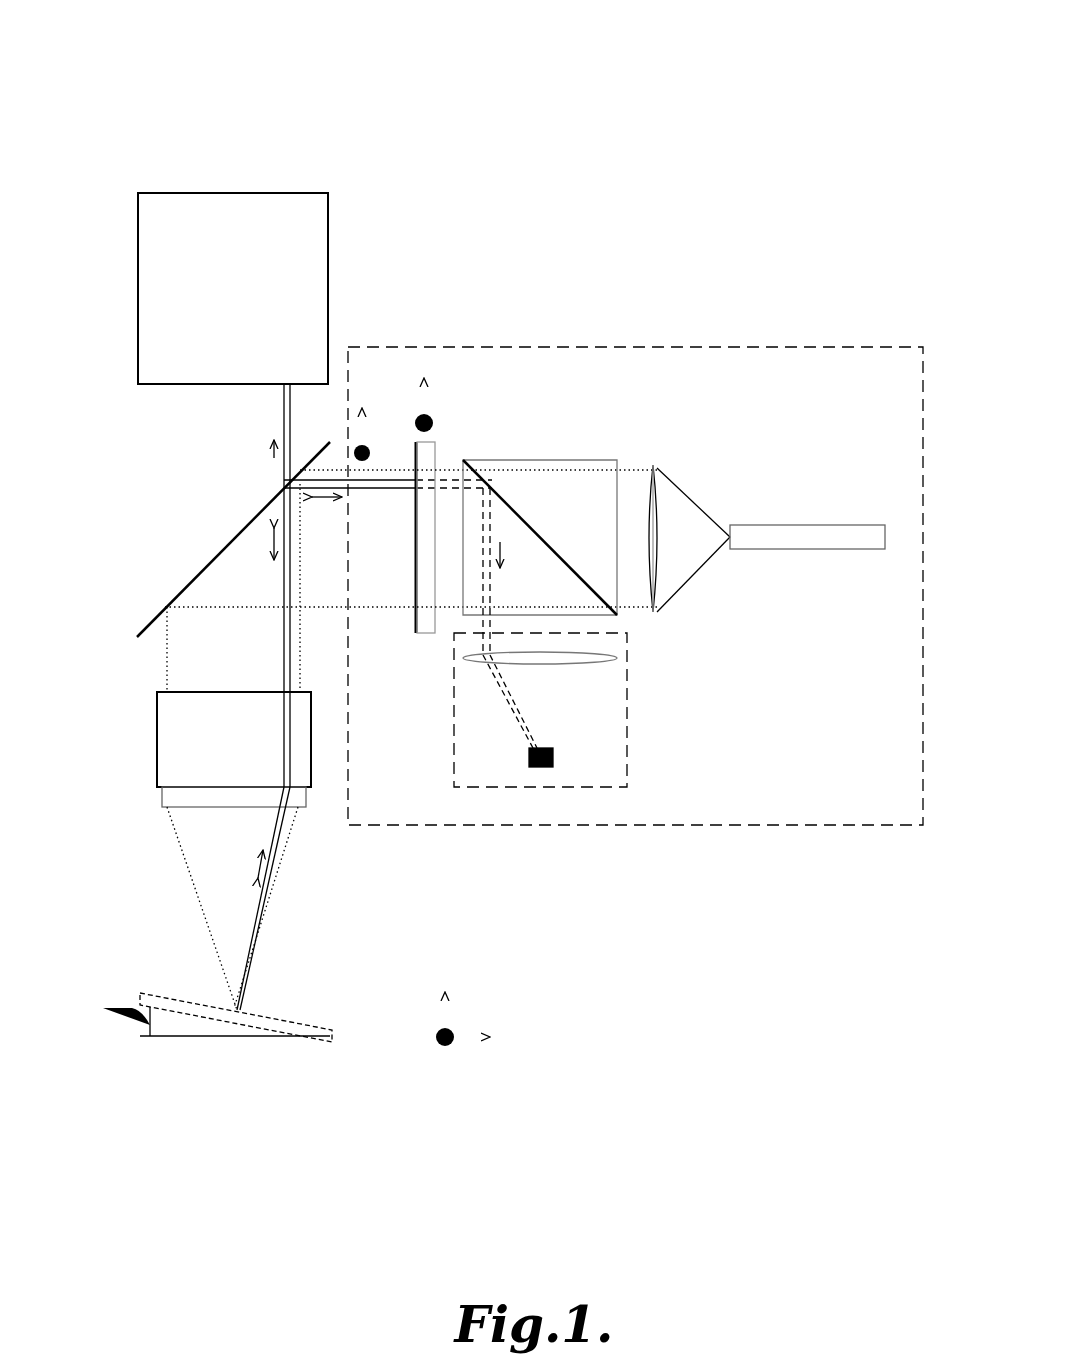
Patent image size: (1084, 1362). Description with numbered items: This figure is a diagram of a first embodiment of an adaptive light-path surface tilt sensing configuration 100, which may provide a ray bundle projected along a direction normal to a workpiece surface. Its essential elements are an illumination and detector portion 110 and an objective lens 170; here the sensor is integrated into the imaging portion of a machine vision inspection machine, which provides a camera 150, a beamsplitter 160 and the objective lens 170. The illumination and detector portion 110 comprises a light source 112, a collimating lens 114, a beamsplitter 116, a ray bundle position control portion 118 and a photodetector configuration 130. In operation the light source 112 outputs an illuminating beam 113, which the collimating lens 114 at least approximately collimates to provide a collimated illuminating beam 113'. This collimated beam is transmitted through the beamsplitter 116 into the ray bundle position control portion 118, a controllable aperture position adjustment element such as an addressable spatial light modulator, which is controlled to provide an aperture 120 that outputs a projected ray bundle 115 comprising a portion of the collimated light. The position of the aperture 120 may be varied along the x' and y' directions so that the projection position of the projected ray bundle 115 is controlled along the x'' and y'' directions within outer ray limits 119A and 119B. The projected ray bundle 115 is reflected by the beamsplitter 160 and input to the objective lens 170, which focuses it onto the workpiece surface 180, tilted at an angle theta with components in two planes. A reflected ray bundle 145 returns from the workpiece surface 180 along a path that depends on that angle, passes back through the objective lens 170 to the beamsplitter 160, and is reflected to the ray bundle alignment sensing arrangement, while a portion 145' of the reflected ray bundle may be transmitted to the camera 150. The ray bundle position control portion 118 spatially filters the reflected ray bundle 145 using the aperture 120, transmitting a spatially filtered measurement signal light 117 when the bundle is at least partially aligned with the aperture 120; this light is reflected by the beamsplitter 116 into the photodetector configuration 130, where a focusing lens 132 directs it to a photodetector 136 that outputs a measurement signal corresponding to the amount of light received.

The adaptive light-path surface tilt sensing configuration 100 is at (877, 142).
The illumination and detector portion 110 is at (909, 346).
The light source 112 is at (866, 525).
The illuminating beam 113 is at (695, 535).
The collimated illuminating beam 113' is at (619, 460).
The collimating lens 114 is at (657, 470).
The projected ray bundle 115 is at (335, 480).
The beamsplitter 116 is at (573, 460).
The spatially filtered measurement signal light 117 is at (480, 620).
The ray bundle position control portion 118 is at (424, 637).
The outer ray limit 119A is at (533, 470).
The outer ray limit 119B is at (580, 607).
The aperture 120 is at (413, 490).
The photodetector configuration 130 is at (627, 636).
The focusing lens 132 is at (613, 657).
The photodetector 136 is at (553, 765).
The reflected ray bundle 145 is at (288, 747).
The portion of the reflected ray bundle 145' is at (243, 434).
The camera 150 is at (138, 240).
The beamsplitter 160 is at (172, 603).
The objective lens 170 is at (157, 752).
The workpiece surface 180 is at (300, 1020).